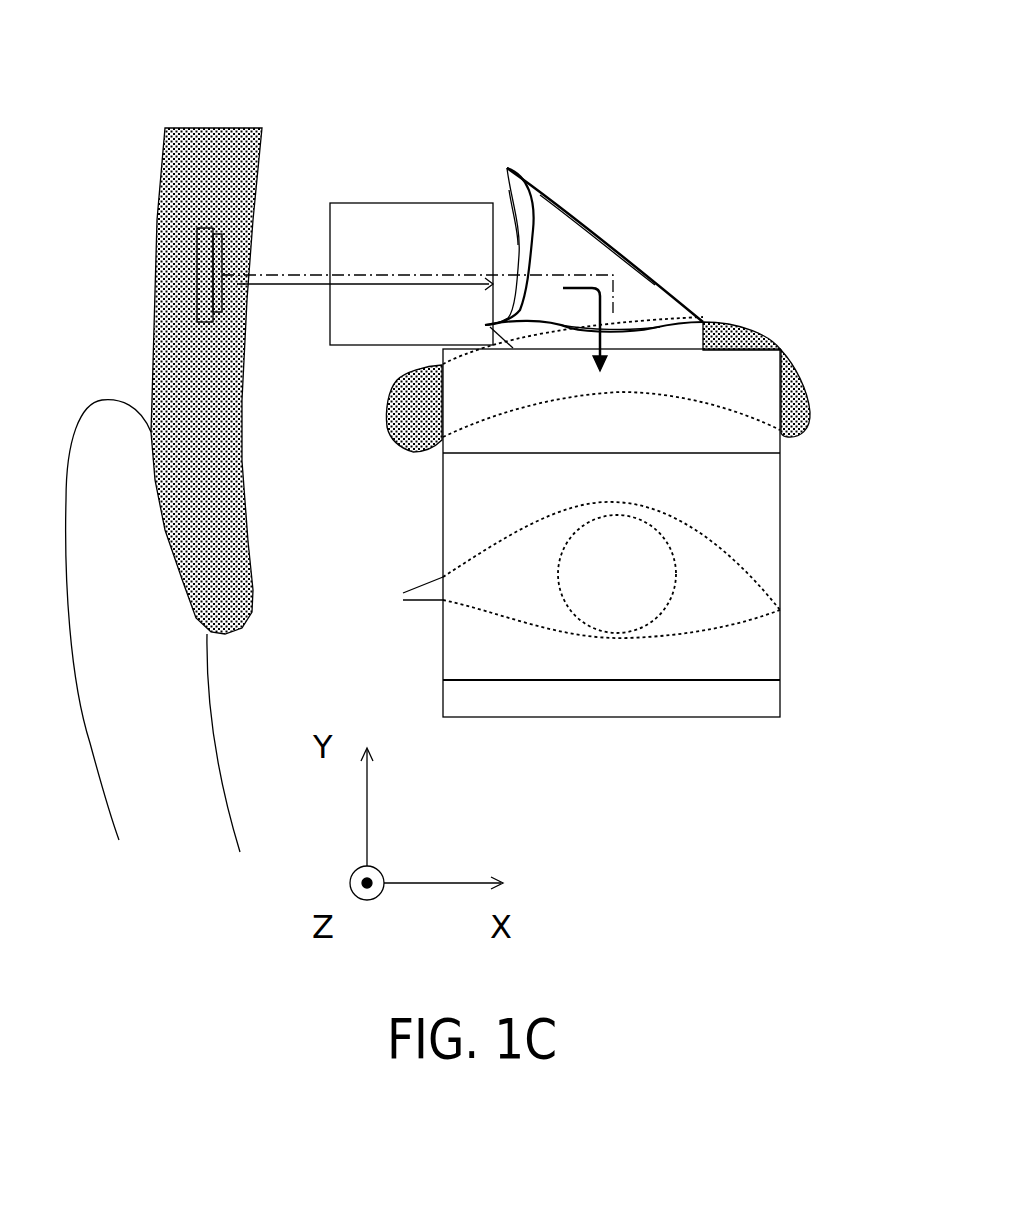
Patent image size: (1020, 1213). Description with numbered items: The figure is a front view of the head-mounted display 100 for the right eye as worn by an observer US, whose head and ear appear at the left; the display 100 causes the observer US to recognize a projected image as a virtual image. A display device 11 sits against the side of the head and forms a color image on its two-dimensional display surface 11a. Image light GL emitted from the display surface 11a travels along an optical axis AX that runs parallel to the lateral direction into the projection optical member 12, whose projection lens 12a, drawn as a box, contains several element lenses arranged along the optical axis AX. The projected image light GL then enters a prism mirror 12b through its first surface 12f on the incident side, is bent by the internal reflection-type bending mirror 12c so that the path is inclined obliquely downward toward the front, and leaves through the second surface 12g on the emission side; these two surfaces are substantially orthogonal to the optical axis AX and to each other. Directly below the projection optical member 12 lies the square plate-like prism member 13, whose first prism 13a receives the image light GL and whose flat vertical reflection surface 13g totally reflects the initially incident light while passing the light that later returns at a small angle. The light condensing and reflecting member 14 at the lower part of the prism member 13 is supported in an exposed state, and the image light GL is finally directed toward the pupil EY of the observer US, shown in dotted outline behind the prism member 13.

The observer US is at (161, 172).
The display device 11 is at (207, 227).
The display surface 11a is at (218, 266).
The projection optical member 12 is at (474, 175).
The projection lens 12a is at (392, 213).
The first surface 12f is at (507, 200).
The prism mirror 12b is at (562, 223).
The bending mirror 12c is at (605, 268).
The second surface 12g is at (633, 345).
The head-mounted display 100 is at (676, 285).
The prism member 13 is at (426, 441).
The first prism 13a is at (727, 718).
The reflection surface 13g is at (650, 437).
The light condensing and reflecting member 14 is at (612, 670).
The pupil EY is at (598, 588).
The image light GL is at (282, 287).
The optical axis AX is at (420, 270).